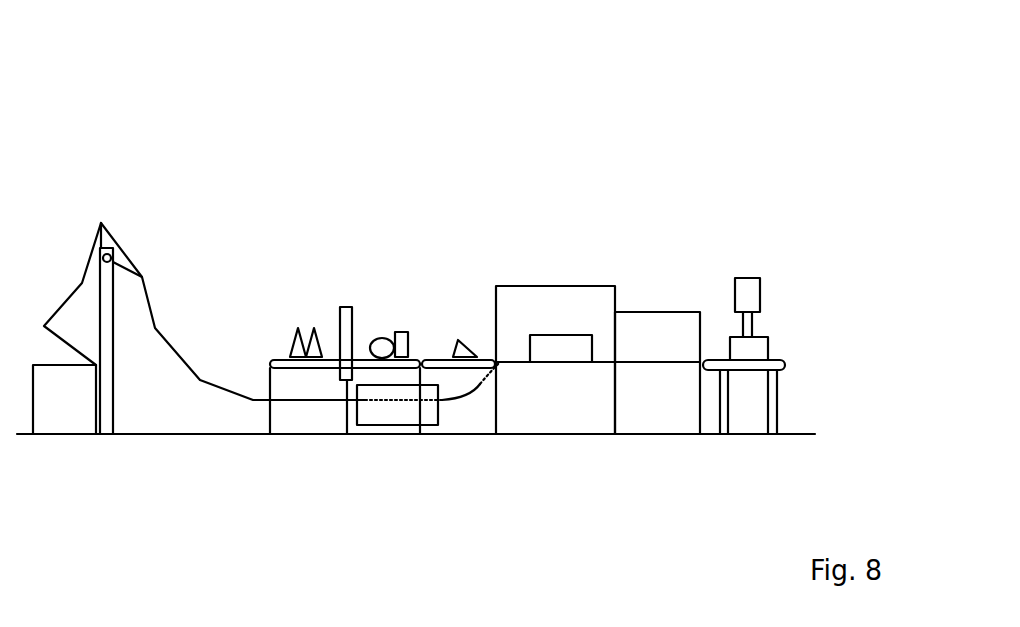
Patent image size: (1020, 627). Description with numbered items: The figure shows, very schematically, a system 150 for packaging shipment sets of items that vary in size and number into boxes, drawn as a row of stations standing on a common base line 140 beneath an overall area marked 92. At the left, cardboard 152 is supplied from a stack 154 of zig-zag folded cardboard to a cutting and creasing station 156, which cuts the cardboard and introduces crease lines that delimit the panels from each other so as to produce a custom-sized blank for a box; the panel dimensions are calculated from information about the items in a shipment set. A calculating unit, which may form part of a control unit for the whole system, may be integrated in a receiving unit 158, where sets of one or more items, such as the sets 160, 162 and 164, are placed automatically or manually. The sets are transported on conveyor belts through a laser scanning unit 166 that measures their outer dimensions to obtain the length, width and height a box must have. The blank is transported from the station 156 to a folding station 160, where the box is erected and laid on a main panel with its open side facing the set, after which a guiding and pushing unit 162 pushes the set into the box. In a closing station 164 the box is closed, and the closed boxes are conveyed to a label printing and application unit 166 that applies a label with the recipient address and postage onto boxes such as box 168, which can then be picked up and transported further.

The web material 92 is at (632, 79).
The floor / base line 140 is at (600, 435).
The system for packaging shipment sets 150 is at (768, 109).
The cardboard 152 is at (155, 304).
The stack of zig-zag folded cardboard 154 is at (62, 435).
The cutting and creasing station 156 is at (398, 437).
The receiving unit 158 is at (278, 437).
The folding station 160 is at (293, 303).
The guiding and pushing unit 162 is at (398, 307).
The closing station 164 is at (447, 308).
The laser scanning unit 166 is at (342, 307).
The box 168 is at (757, 347).